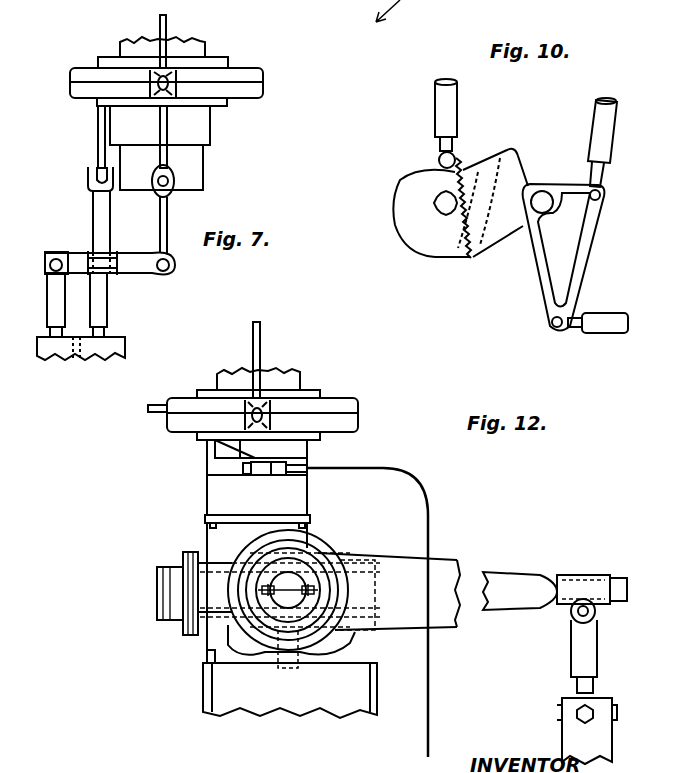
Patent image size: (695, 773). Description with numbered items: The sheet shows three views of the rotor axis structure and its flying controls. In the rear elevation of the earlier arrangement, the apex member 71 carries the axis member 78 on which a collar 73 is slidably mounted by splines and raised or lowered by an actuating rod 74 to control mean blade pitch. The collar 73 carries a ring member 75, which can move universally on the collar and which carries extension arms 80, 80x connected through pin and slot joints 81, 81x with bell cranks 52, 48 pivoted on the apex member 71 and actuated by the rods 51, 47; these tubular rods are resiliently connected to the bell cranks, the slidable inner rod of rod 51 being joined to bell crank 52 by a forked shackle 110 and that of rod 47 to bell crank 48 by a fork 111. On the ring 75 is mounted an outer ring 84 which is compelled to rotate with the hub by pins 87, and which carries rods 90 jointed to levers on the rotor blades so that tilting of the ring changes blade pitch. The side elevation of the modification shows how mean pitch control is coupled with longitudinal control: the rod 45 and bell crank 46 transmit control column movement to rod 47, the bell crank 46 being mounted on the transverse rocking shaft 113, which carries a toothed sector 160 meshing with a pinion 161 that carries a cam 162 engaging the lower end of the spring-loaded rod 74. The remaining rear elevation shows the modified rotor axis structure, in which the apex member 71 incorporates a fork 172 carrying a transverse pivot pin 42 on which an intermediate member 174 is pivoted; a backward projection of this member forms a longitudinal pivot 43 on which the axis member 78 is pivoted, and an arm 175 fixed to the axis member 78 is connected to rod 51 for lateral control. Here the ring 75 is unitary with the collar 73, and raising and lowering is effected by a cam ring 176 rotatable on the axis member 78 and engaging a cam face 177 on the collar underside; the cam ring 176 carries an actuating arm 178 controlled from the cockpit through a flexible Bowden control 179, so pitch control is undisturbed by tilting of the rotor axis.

In FIG. 7, the ring member 75 is at (112, 62).
In FIG. 12, the ring member 75 is at (320, 393).
In FIG. 7, the rods 90 is at (167, 22).
In FIG. 12, the rods 90 is at (260, 333).
In FIG. 7, the outer ring 84 is at (263, 84).
In FIG. 12, the outer ring 84 is at (358, 407).
In FIG. 7, the collar 73 is at (125, 125).
In FIG. 12, the collar 73 is at (293, 448).
In FIG. 7, the extension arm 80 is at (98, 150).
In FIG. 7, the extension arm 80x is at (170, 130).
In FIG. 7, the pin and slot joint 81 is at (88, 178).
In FIG. 7, the pin and slot joint 81x is at (175, 180).
In FIG. 7, the bell crank 52 is at (96, 208).
In FIG. 7, the bell crank 48 is at (138, 262).
In FIG. 7, the forked shackle 110 is at (108, 290).
In FIG. 7, the fork 111 is at (55, 302).
In FIG. 7, the rod 51 is at (115, 347).
In FIG. 12, the rod 51 is at (580, 747).
In FIG. 7, the rod 47 is at (60, 350).
In FIG. 10, the rod 47 is at (602, 127).
In FIG. 10, the actuating rod 74 is at (438, 96).
In FIG. 10, the toothed sector 160 is at (515, 185).
In FIG. 10, the cam 162 is at (407, 218).
In FIG. 10, the pinion 161 is at (440, 213).
In FIG. 10, the transverse rocking shaft 113 is at (537, 203).
In FIG. 10, the bell crank 46 is at (596, 228).
In FIG. 10, the rod 45 is at (617, 322).
In FIG. 12, the pins 87 is at (152, 412).
In FIG. 12, the cam ring 176 is at (210, 467).
In FIG. 12, the cam face 177 is at (252, 455).
In FIG. 12, the actuating arm 178 is at (247, 467).
In FIG. 12, the axis member 78 is at (257, 495).
In FIG. 12, the longitudinal pivot 43 is at (243, 550).
In FIG. 12, the transverse pivot pin 42 is at (190, 637).
In FIG. 12, the fork 172 is at (352, 640).
In FIG. 12, the intermediate member 174 is at (297, 658).
In FIG. 12, the apex member 71 is at (317, 690).
In FIG. 12, the arm 175 is at (445, 607).
In FIG. 12, the Bowden control 179 is at (430, 732).